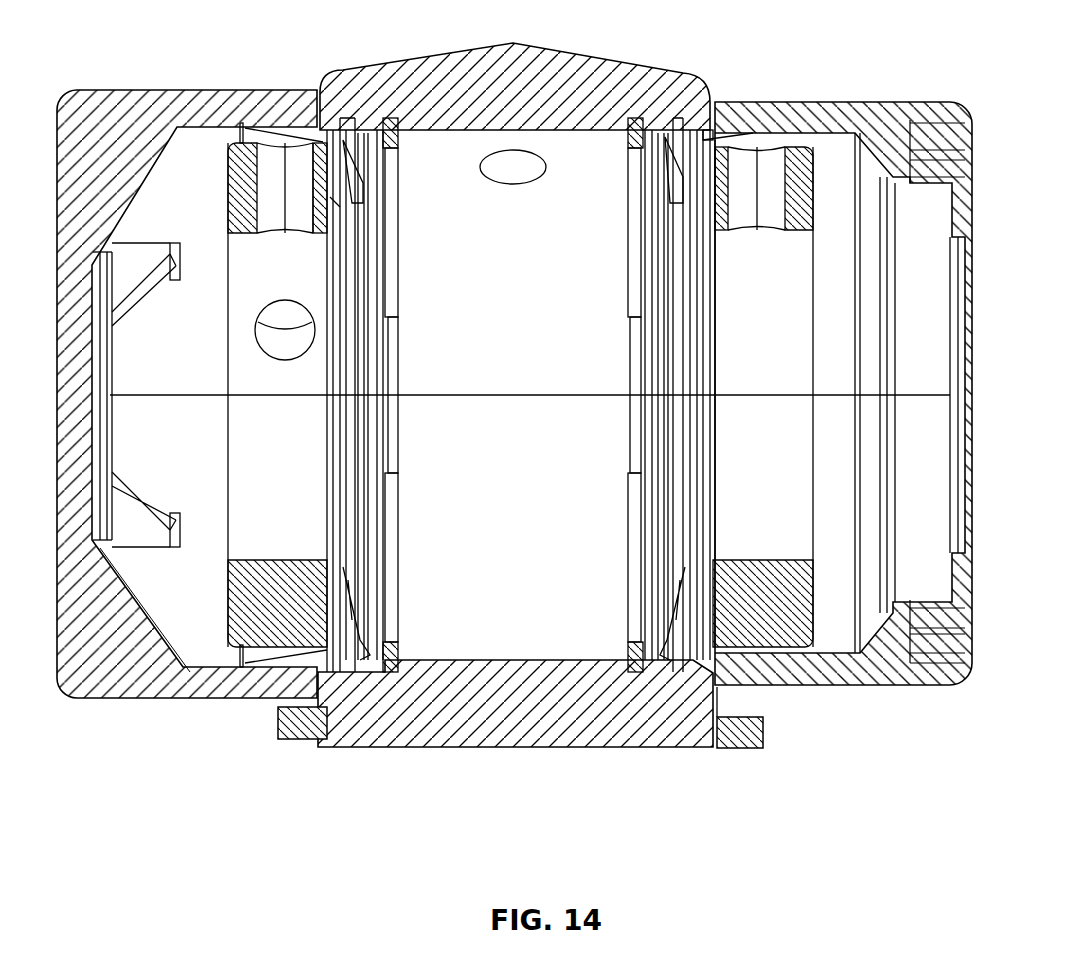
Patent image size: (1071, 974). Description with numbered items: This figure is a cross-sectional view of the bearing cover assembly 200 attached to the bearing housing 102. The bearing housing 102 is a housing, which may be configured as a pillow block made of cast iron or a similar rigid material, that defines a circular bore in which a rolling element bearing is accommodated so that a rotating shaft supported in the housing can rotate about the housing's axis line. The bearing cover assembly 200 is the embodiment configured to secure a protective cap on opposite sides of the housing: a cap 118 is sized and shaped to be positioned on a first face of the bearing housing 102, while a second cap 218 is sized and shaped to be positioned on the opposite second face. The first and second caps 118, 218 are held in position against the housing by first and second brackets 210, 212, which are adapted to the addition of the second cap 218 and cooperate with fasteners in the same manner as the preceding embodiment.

The bearing cover assembly 200 is at (218, 797).
The bearing housing 102 is at (405, 740).
The cap 118 is at (142, 695).
The first bracket 210 is at (297, 735).
The second bracket 212 is at (740, 740).
The second cap 218 is at (840, 680).